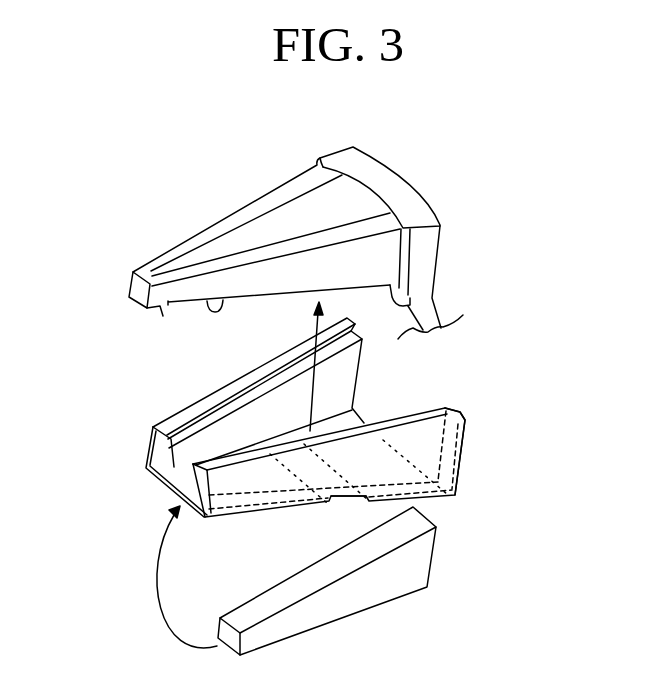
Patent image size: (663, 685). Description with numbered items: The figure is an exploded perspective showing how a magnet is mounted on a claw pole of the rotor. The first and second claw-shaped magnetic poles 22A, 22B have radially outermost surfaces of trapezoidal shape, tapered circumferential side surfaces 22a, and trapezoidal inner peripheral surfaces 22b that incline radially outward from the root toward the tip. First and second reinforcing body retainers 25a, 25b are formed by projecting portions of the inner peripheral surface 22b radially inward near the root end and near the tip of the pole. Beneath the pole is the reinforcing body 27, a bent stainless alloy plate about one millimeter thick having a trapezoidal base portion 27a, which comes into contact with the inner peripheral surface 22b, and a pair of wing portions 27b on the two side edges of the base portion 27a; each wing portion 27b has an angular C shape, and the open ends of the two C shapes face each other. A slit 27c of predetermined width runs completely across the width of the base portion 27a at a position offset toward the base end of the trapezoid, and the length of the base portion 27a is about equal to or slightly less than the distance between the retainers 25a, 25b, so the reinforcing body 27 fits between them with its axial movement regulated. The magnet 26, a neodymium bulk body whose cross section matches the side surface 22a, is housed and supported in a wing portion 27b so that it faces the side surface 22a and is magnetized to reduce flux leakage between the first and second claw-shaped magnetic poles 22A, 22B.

The first claw-shaped magnetic pole 22A is at (335, 257).
The second claw-shaped magnetic pole 22B is at (335, 257).
The circumferential side surface 22a is at (282, 274).
The inner peripheral surface 22b is at (209, 309).
The first reinforcing body retainer 25a is at (163, 316).
The second reinforcing body retainer 25b is at (410, 305).
The magnet 26 is at (195, 488).
The reinforcing body 27 is at (346, 439).
The base portion 27a is at (358, 420).
The wing portion 27b is at (232, 388).
The slit 27c is at (342, 505).